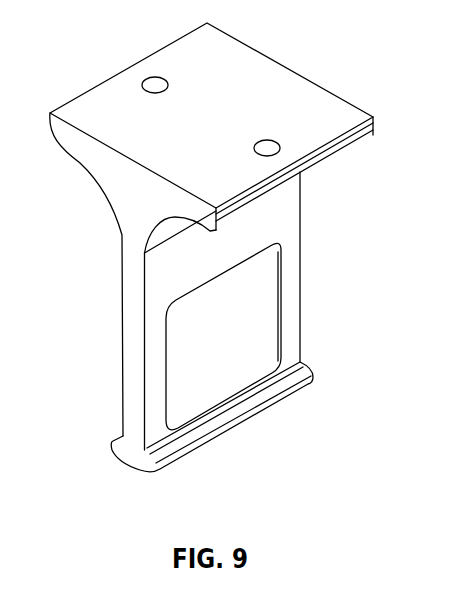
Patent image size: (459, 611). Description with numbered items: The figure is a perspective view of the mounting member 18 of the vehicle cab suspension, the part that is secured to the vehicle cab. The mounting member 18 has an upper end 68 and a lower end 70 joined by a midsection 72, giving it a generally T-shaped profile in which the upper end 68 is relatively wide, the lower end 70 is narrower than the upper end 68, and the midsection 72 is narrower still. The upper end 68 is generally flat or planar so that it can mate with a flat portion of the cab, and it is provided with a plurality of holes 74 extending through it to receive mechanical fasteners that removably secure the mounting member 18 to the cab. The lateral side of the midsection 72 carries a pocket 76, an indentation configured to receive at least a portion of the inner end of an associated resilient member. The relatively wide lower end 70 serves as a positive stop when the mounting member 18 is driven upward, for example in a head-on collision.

The mounting member 18 is at (76, 286).
The upper end 68 is at (243, 78).
The lower end 70 is at (128, 463).
The midsection 72 is at (121, 262).
The holes 74 is at (154, 77).
The pocket 76 is at (262, 330).